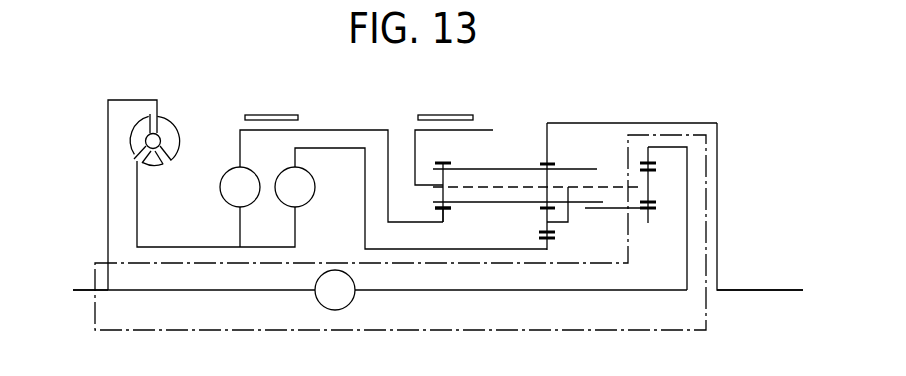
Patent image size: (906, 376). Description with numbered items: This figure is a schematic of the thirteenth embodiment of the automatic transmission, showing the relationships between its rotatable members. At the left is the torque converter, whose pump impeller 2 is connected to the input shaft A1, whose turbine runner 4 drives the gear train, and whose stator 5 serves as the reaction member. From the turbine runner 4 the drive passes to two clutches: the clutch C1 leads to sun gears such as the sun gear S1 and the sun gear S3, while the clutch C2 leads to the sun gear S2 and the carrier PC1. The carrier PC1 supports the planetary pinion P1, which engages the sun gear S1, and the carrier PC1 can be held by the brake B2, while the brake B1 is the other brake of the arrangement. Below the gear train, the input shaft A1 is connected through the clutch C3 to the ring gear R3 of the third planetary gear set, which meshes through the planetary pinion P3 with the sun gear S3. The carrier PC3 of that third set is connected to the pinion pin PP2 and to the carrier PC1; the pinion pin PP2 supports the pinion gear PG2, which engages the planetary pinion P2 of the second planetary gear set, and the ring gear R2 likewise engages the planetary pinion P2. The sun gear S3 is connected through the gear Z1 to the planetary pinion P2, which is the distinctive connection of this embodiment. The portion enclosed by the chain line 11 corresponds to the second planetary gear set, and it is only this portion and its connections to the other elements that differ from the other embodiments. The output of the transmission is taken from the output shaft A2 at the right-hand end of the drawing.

The pump impeller 2 is at (178, 141).
The turbine runner 4 is at (131, 152).
The stator 5 is at (161, 163).
The brake B1 is at (445, 102).
The brake B2 is at (271, 101).
The clutch C1 is at (295, 187).
The clutch C2 is at (240, 187).
The clutch C3 is at (335, 290).
The carrier PC1 is at (425, 187).
The planetary pinion P1 is at (448, 172).
The sun gear S1 is at (448, 213).
The ring gear R2 is at (545, 143).
The planetary pinion P2 is at (552, 180).
The sun gear S2 is at (545, 250).
The pinion gear PG2 is at (545, 223).
The pinion pin PP2 is at (562, 223).
The gear Z1 is at (597, 210).
The carrier PC3 is at (593, 187).
The ring gear R3 is at (673, 146).
The planetary pinion P3 is at (650, 180).
The sun gear S3 is at (648, 223).
The input shaft A1 is at (90, 292).
The output shaft A2 is at (783, 295).
The chain line 11 is at (706, 298).